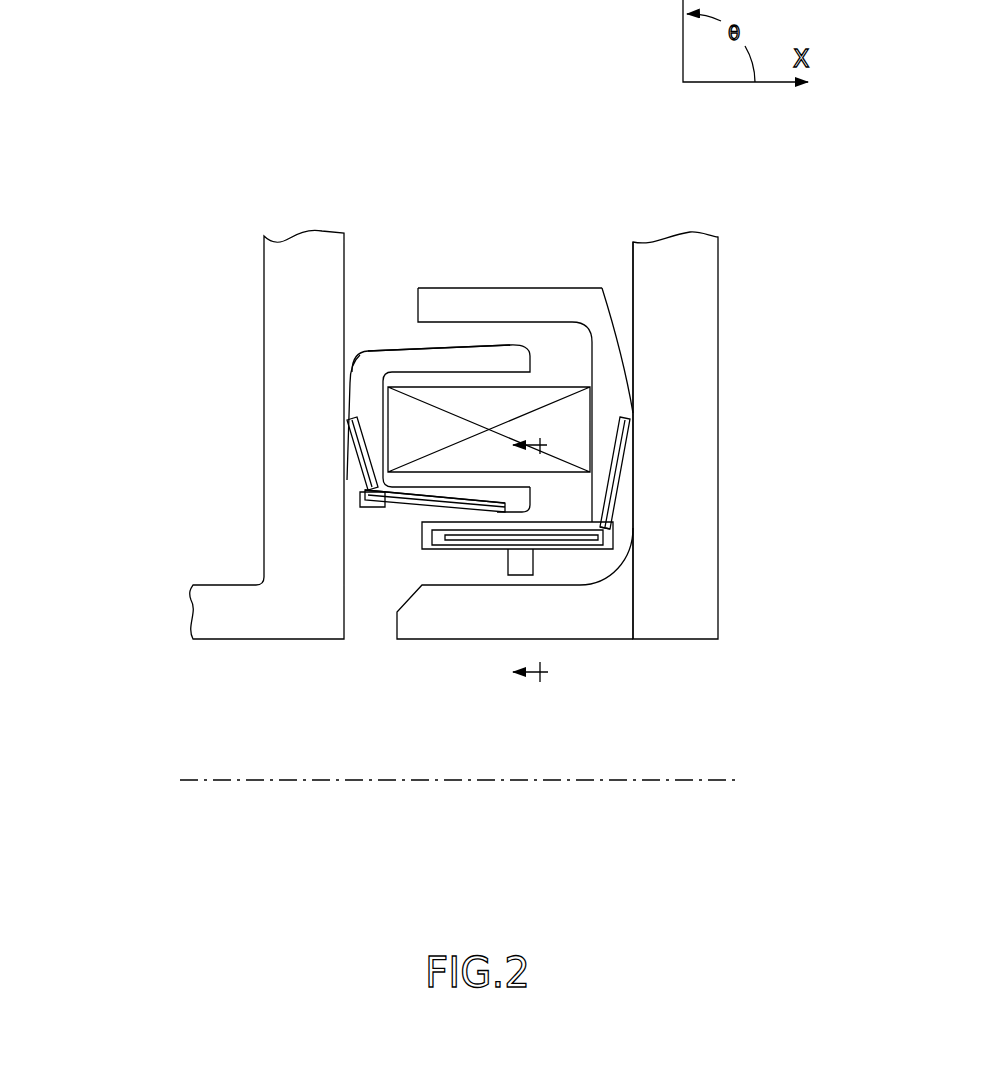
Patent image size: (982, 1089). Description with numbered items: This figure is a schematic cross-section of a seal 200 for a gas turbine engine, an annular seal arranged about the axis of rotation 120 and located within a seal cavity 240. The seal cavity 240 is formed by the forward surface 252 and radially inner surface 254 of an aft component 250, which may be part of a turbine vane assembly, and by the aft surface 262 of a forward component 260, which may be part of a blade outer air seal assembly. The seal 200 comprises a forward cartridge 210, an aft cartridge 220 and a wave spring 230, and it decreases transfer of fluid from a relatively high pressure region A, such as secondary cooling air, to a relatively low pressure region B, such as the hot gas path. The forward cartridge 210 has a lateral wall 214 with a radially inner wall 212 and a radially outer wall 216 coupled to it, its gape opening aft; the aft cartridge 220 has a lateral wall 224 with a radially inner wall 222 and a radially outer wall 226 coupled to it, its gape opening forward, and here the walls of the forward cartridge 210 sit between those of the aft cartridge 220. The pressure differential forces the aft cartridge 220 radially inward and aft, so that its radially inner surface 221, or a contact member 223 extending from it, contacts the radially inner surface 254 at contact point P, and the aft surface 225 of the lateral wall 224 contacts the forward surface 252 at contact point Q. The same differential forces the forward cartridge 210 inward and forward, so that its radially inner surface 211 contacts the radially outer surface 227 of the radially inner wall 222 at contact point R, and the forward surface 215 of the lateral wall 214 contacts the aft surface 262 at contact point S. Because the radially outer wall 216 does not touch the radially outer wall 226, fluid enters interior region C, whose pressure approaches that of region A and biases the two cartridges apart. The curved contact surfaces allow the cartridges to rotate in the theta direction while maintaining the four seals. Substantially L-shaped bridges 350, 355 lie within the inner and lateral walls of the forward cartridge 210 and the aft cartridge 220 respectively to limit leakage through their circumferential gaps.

The seal 200 is at (494, 275).
The forward cartridge 210 is at (350, 378).
The radially inner surface 211 is at (418, 507).
The radially inner wall 212 is at (392, 503).
The lateral wall 214 is at (357, 473).
The forward surface 215 is at (357, 368).
The radially outer wall 216 is at (393, 348).
The aft cartridge 220 is at (627, 345).
The radially inner surface 221 is at (604, 586).
The radially inner wall 222 is at (602, 582).
The contact member 223 is at (537, 568).
The lateral wall 224 is at (620, 503).
The aft surface 225 is at (625, 325).
The radially outer wall 226 is at (547, 285).
The radially outer surface 227 is at (558, 522).
The wave spring 230 is at (537, 383).
The seal cavity 240 is at (466, 207).
The aft component 250 is at (720, 468).
The forward surface 252 is at (633, 363).
The radially inner surface 254 is at (550, 551).
The forward component 260 is at (265, 436).
The aft surface 262 is at (383, 513).
The bridge 350 is at (423, 517).
The bridge 355 is at (627, 457).
The axis of rotation 120 is at (260, 782).
The high pressure region A is at (375, 220).
The low pressure region B is at (370, 690).
The interior region C is at (575, 337).
The contact point P is at (520, 589).
The contact point Q is at (637, 420).
The contact point R is at (495, 527).
The contact point S is at (340, 422).